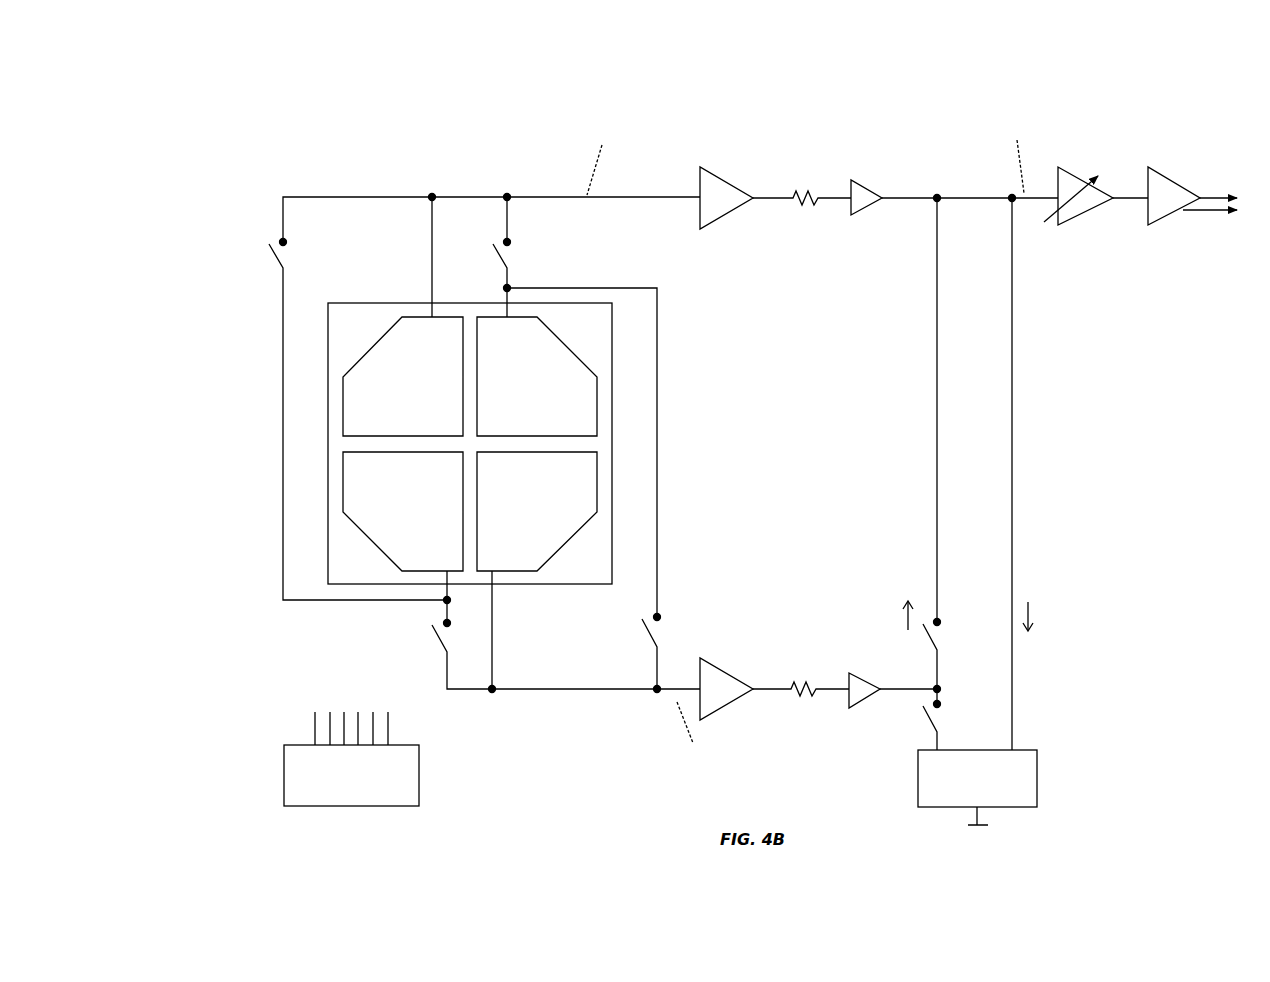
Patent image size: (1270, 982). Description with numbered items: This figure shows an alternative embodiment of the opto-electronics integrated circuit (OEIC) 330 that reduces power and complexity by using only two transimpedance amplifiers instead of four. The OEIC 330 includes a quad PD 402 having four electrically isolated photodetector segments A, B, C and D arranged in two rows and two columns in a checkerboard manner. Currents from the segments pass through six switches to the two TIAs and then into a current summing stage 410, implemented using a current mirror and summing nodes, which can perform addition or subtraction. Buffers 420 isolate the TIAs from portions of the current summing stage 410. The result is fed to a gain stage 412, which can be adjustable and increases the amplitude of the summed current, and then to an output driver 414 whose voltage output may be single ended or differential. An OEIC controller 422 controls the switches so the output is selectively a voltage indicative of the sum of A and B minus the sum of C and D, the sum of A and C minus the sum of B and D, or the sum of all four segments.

The opto-electronics integrated circuit 330 is at (712, 423).
The current summing stage 410 is at (1047, 55).
The quad photodetector 402 is at (565, 302).
The gain stage 412 is at (1080, 173).
The output driver 414 is at (1172, 173).
The buffers 420 is at (870, 187).
The OEIC controller 422 is at (422, 773).